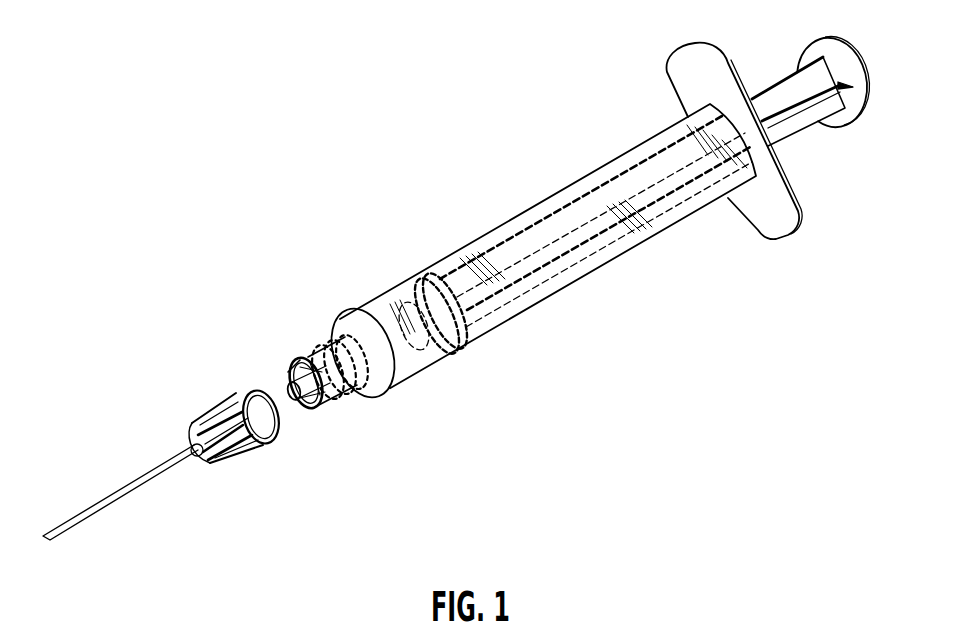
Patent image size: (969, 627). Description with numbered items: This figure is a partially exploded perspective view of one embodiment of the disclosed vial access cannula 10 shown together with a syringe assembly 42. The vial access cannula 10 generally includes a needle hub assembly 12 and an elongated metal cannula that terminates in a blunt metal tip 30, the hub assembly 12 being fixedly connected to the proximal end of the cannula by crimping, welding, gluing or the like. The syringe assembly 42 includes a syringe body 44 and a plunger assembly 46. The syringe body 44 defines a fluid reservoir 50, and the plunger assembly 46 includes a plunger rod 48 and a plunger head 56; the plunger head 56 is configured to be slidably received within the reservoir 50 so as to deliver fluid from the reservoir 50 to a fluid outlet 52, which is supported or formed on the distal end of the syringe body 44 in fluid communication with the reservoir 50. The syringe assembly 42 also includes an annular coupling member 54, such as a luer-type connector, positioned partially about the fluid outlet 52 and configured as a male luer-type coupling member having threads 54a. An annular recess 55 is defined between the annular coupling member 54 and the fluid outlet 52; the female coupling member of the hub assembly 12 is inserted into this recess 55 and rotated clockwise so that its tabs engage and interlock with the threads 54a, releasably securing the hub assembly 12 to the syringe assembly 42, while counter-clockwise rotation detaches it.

The vial access cannula 10 is at (115, 467).
The needle hub assembly 12 is at (203, 402).
The blunt metal tip 30 is at (48, 542).
The syringe assembly 42 is at (538, 182).
The syringe body 44 is at (574, 277).
The plunger assembly 46 is at (807, 145).
The plunger rod 48 is at (790, 90).
The fluid reservoir 50 is at (413, 367).
The fluid outlet 52 is at (287, 386).
The annular coupling member 54 is at (332, 402).
The threads 54a is at (350, 394).
The annular recess 55 is at (291, 360).
The plunger head 56 is at (403, 296).